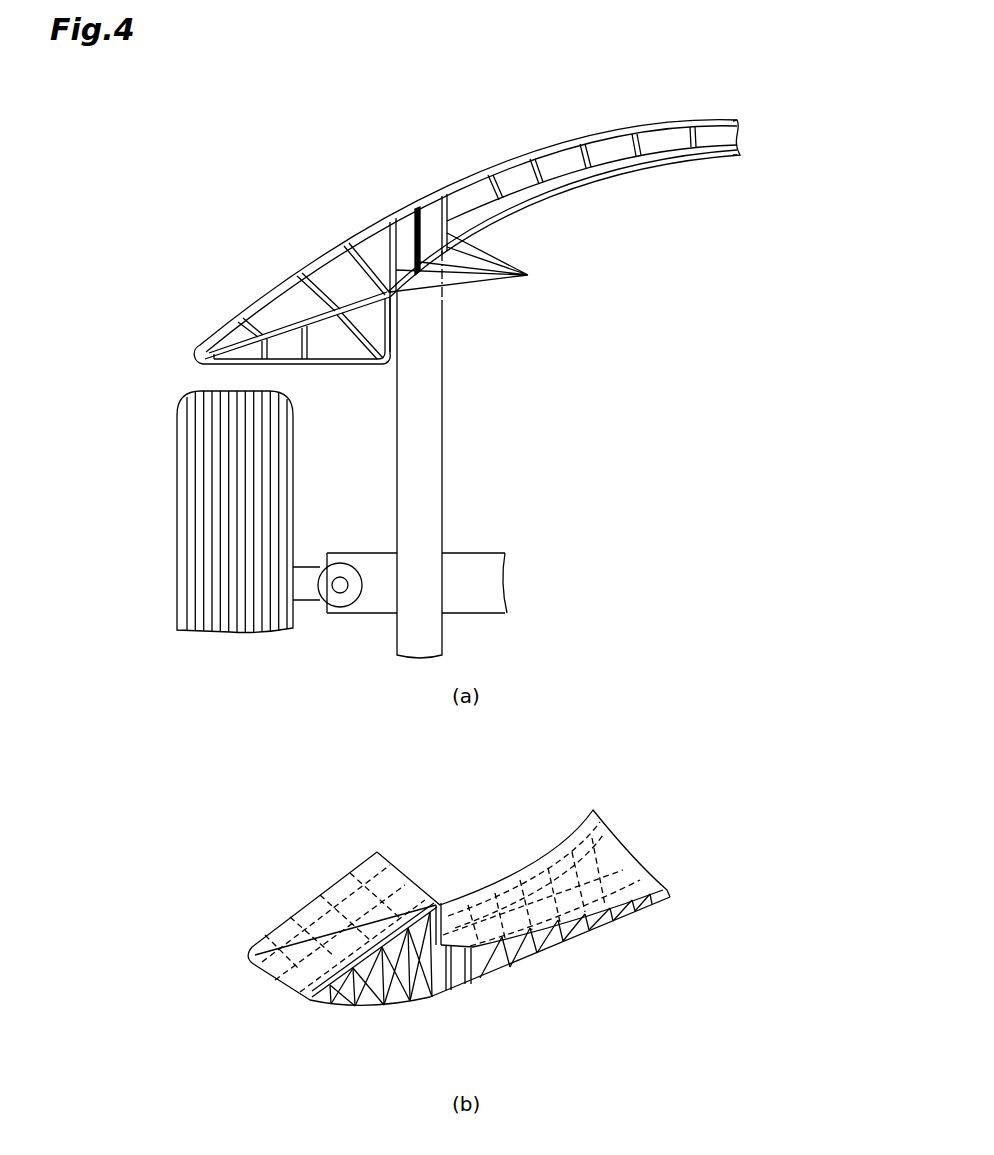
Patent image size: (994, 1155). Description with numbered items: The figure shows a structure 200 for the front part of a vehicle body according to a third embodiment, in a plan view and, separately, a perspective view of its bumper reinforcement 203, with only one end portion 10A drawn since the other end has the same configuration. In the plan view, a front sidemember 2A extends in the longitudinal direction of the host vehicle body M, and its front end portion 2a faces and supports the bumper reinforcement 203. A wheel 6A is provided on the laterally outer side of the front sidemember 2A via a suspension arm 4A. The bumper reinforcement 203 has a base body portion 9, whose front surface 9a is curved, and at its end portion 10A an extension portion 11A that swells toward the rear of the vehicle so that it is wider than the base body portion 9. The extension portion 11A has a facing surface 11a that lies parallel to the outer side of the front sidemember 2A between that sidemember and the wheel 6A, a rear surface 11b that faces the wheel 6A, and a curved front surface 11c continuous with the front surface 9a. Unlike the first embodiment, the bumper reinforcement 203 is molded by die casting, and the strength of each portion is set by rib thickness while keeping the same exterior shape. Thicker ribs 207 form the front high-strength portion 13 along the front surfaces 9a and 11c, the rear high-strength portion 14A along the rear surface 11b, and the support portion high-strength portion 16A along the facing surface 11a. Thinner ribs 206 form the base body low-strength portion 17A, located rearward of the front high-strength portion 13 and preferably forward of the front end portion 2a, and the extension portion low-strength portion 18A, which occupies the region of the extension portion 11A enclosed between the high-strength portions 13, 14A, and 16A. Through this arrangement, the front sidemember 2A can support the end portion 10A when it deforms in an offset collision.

The structure for a front part of a vehicle body 200 is at (290, 146).
The end portion 10A is at (183, 291).
The extension portion 11A is at (235, 272).
The facing surface 11a is at (393, 330).
The rear surface 11b is at (325, 362).
The front surface 11c is at (272, 280).
The rear high-strength portion 14A is at (222, 368).
The support portion high-strength portion 16A is at (372, 326).
The base body low-strength portion 17A is at (430, 208).
The extension portion low-strength portion 18A is at (350, 281).
The bumper reinforcement 203 is at (652, 120).
The ribs 206 is at (528, 275).
The ribs 207 is at (605, 140).
The base body portion 9 is at (718, 170).
The front surface 9a is at (609, 924).
The front high-strength portion 13 is at (718, 138).
The front end portion 2a is at (476, 282).
The front sidemember 2A is at (425, 480).
The suspension arm 4A is at (378, 595).
The wheel 6A is at (195, 508).
The host vehicle body M is at (168, 620).